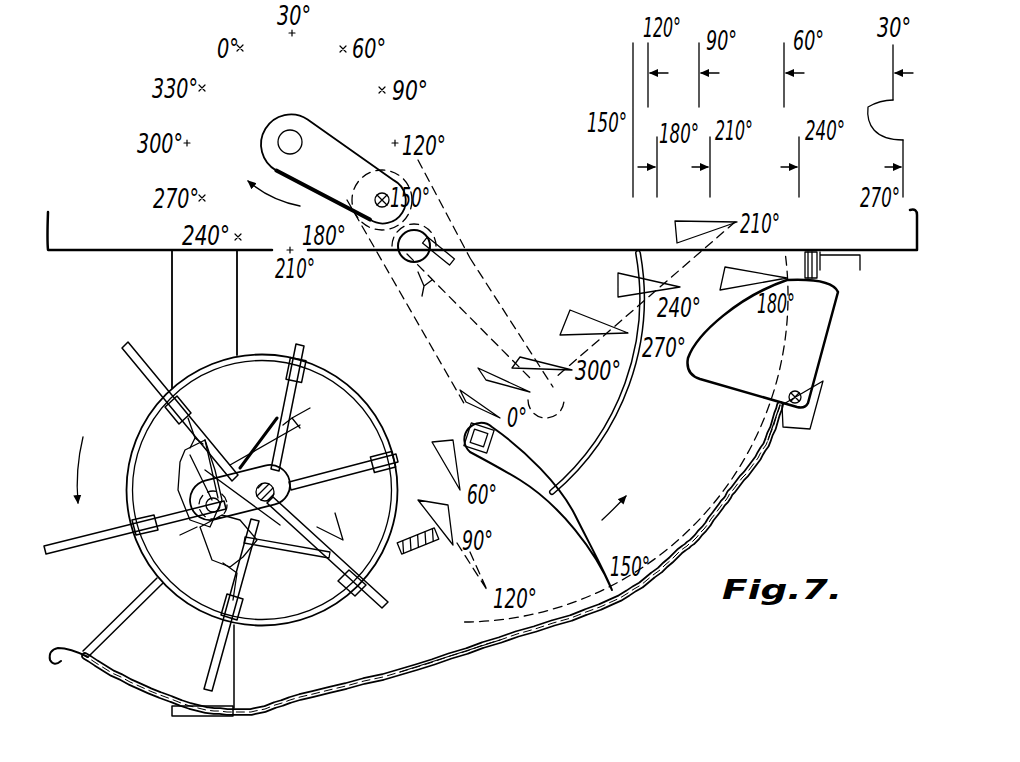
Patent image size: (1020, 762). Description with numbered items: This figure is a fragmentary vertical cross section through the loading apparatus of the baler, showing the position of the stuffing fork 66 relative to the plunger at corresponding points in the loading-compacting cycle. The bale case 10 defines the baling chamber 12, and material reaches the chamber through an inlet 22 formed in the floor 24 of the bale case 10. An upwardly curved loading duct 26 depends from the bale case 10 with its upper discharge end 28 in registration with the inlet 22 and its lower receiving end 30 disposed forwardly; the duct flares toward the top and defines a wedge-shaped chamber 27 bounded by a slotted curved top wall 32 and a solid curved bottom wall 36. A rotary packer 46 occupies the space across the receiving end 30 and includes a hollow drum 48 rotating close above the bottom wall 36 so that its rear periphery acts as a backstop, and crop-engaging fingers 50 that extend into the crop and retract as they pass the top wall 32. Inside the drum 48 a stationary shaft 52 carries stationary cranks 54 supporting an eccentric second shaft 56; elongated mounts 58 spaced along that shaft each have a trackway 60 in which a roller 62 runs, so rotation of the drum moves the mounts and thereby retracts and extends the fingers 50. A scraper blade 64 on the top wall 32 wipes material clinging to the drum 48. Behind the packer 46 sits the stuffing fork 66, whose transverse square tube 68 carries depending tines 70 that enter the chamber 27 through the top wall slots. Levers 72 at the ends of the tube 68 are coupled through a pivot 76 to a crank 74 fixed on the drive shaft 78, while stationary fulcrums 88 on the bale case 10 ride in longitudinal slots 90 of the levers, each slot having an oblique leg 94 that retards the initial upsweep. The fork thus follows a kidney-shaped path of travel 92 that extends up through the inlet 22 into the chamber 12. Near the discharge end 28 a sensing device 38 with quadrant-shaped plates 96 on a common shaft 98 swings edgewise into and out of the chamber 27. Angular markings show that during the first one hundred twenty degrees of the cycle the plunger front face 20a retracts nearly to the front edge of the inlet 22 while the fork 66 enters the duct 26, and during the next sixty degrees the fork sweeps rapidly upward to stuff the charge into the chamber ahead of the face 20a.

The bale case 10 is at (113, 258).
The baling chamber 12 is at (882, 232).
The front face of the plunger 20a is at (633, 62).
The inlet 22 is at (768, 250).
The floor 24 is at (598, 250).
The loading duct 26 is at (652, 605).
The chamber 27 is at (625, 439).
The upper discharge end 28 is at (622, 268).
The lower receiving end 30 is at (60, 660).
The top wall 32 is at (613, 421).
The bottom wall 36 is at (545, 638).
The sensing device 38 is at (826, 362).
The rotary packer 46 is at (130, 421).
The drum 48 is at (263, 354).
The crop-engaging fingers 50 is at (133, 351).
The stationary shaft 52 is at (290, 470).
The stationary cranks 54 is at (258, 550).
The second shaft 56 is at (200, 535).
The elongated mounts 58 is at (252, 437).
The longitudinal trackway 60 is at (190, 440).
The roller 62 is at (182, 485).
The scraper blade 64 is at (400, 546).
The stuffing fork 66 is at (512, 300).
The transverse square tube 68 is at (492, 451).
The tines 70 is at (560, 503).
The levers 72 is at (488, 273).
The crank 74 is at (338, 131).
The pivot 76 is at (405, 178).
The drive shaft 78 is at (280, 136).
The stationary fulcrums 88 is at (432, 238).
The slots 90 is at (438, 328).
The path of travel 92 is at (745, 478).
The obliquely extending leg 94 is at (410, 282).
The quadrant-shaped plates 96 is at (820, 325).
The shaft 98 is at (800, 402).